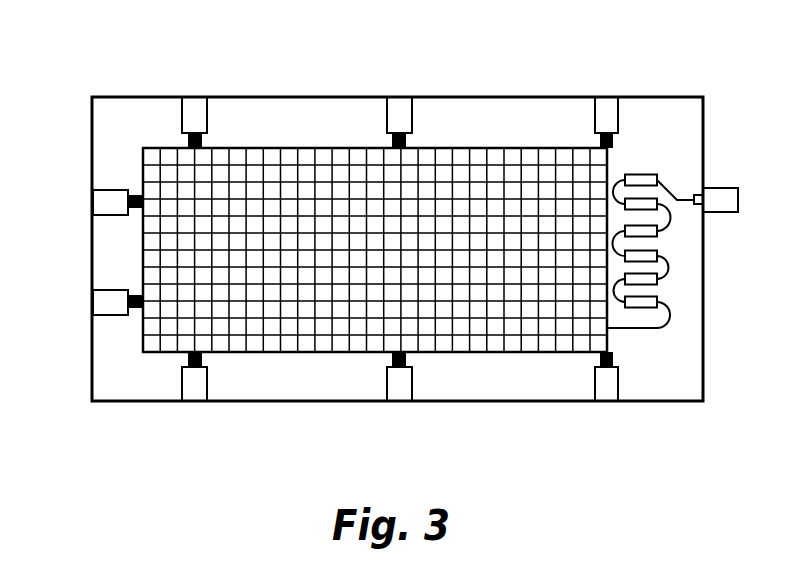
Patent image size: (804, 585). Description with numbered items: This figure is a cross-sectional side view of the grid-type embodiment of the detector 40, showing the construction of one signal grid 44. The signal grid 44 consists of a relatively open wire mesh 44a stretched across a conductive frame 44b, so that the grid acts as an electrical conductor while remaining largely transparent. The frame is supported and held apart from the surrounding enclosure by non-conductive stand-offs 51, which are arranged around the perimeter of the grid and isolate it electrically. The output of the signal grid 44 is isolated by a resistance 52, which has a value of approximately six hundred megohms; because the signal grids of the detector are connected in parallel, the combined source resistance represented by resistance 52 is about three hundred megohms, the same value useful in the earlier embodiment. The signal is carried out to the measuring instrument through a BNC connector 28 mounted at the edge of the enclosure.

The detector 40 is at (337, 43).
The signal grid 44 is at (442, 223).
The mesh 44a is at (173, 325).
The conductive frame 44b is at (253, 148).
The non-conductive stand-offs 51 is at (190, 102).
The resistance 52 is at (660, 303).
The BNC connector 28 is at (718, 182).